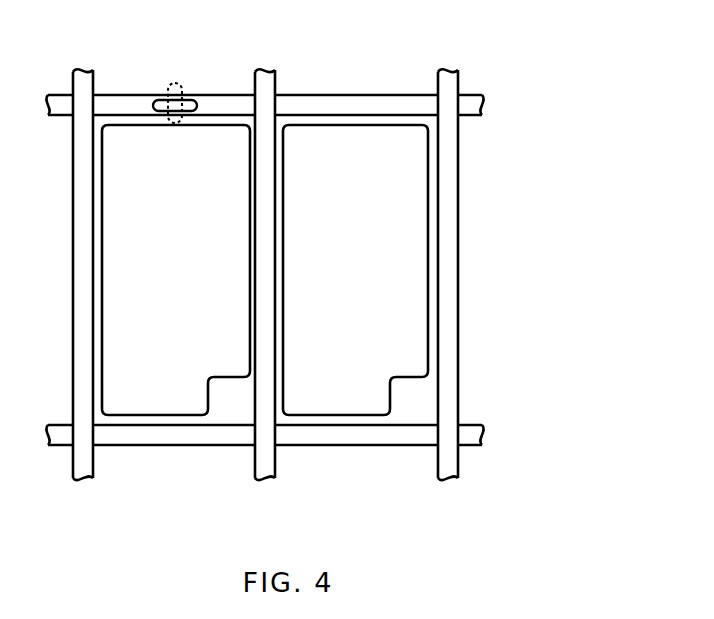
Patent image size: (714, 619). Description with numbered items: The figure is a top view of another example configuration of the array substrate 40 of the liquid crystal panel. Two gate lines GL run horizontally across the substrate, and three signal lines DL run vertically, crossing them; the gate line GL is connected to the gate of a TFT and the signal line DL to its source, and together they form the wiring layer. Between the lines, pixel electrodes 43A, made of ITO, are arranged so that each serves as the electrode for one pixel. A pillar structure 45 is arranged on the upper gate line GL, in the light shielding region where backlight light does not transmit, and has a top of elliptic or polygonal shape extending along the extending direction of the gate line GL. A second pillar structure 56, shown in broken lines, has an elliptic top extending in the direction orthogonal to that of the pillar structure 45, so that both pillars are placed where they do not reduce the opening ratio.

The array substrate 40 is at (507, 58).
The gate line GL is at (484, 106).
The signal line DL is at (83, 481).
The pixel electrode 43A is at (147, 402).
The pillar structure 45 is at (184, 102).
The pillar structure 56 is at (165, 80).